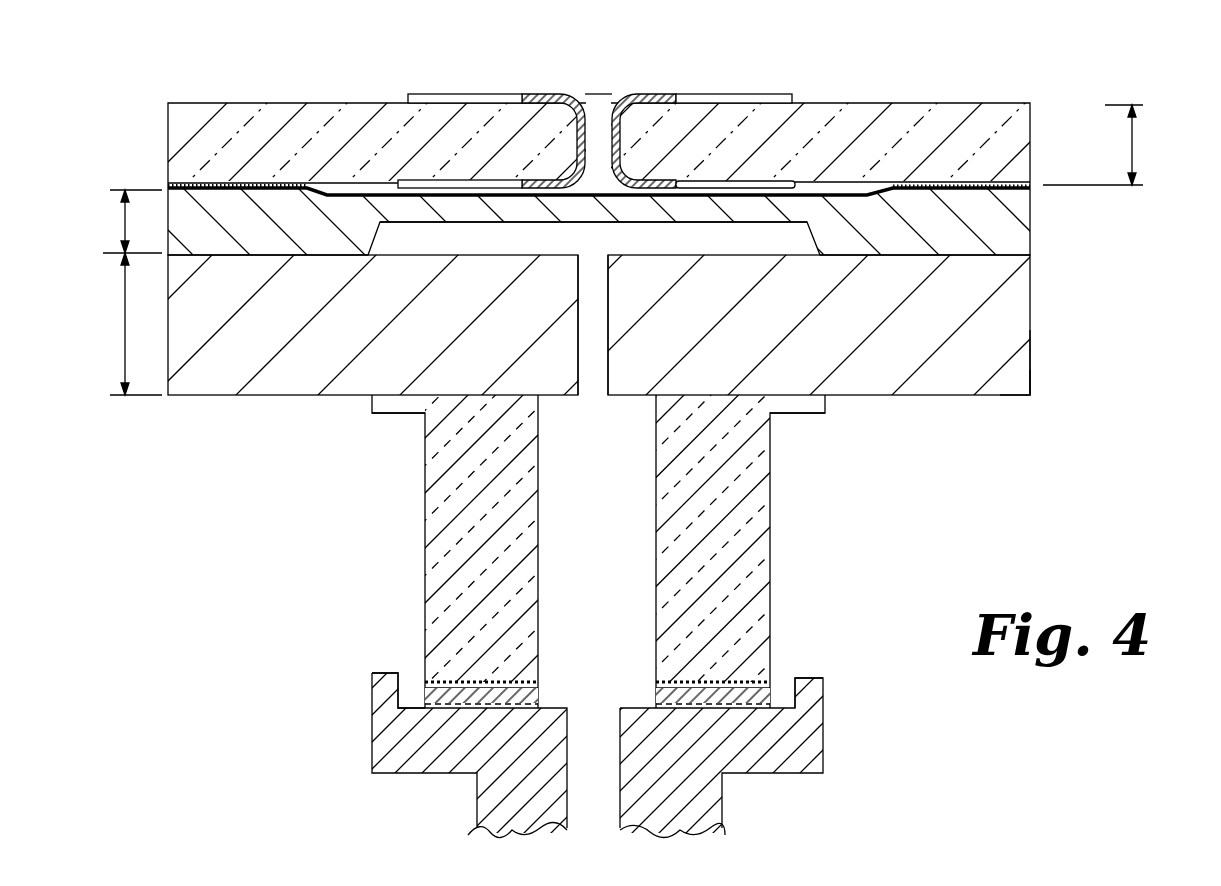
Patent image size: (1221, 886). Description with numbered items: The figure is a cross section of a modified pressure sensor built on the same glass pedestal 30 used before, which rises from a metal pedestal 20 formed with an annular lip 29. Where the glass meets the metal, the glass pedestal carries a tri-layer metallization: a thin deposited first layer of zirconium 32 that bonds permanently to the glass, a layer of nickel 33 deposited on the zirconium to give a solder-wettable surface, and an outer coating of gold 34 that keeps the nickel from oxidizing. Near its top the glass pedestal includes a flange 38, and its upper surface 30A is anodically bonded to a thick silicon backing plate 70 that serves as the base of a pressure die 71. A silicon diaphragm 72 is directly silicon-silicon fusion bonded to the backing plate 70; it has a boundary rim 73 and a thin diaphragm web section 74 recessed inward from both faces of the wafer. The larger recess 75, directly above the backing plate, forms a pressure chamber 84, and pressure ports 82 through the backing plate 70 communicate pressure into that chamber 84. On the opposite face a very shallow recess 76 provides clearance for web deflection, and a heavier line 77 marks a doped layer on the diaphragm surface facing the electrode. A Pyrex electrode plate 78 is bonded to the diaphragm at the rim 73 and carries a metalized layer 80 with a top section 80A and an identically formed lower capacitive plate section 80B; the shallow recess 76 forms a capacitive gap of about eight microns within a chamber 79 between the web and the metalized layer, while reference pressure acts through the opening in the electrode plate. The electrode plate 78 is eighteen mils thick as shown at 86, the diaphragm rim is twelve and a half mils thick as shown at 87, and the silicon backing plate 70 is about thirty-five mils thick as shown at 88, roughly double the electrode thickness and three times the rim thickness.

The pedestal 20 is at (722, 822).
The annular lip 29 is at (805, 677).
The glass pedestal 30 is at (760, 510).
The upper surface 30A is at (793, 397).
The first layer of zirconium 32 is at (450, 684).
The layer of nickel 33 is at (425, 702).
The outer coating of gold 34 is at (452, 708).
The flange 38 is at (368, 415).
The silicon backing plate 70 is at (1013, 385).
The pressure die 71 is at (1032, 367).
The silicon diaphragm 72 is at (258, 232).
The boundary rim 73 is at (1032, 222).
The diaphragm web section 74 is at (600, 222).
The recess 75 is at (702, 254).
The shallow recess 76 is at (862, 185).
The doped layer 77 is at (813, 183).
The electrode plate 78 is at (1007, 111).
The chamber 79 is at (458, 163).
The metalized layer 80 is at (683, 94).
The top section 80A is at (436, 83).
The lower capacitive plate section 80B is at (735, 190).
The pressure ports 82 is at (598, 94).
The pressure chamber 84 is at (410, 233).
The electrode plate thickness 86 is at (1135, 140).
The diaphragm rim thickness 87 is at (120, 228).
The backing plate thickness 88 is at (122, 325).